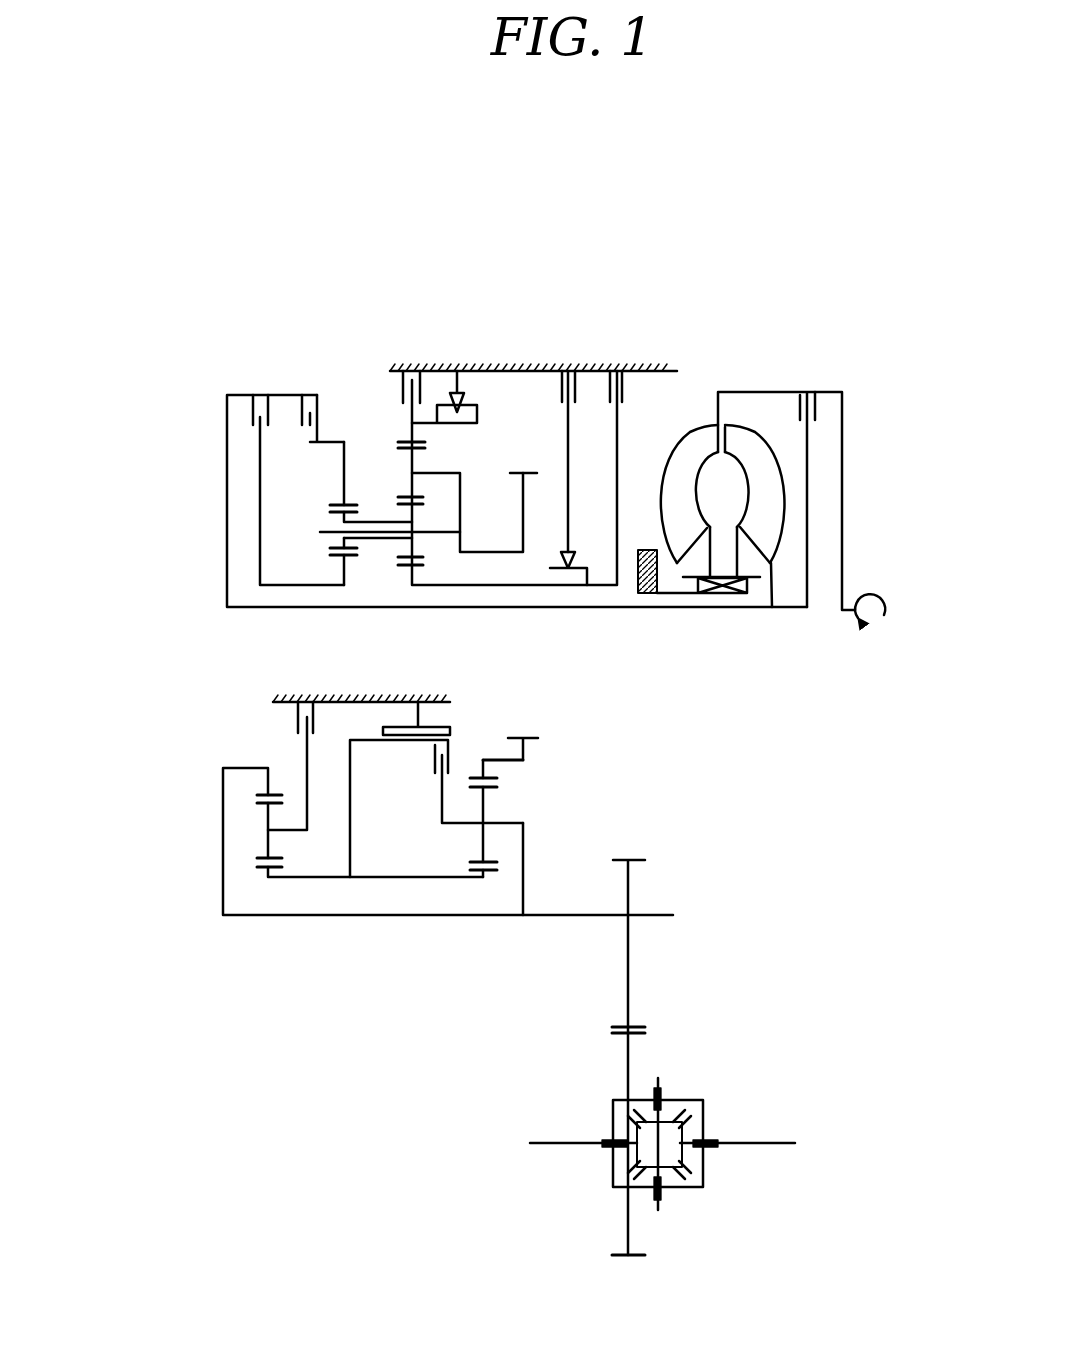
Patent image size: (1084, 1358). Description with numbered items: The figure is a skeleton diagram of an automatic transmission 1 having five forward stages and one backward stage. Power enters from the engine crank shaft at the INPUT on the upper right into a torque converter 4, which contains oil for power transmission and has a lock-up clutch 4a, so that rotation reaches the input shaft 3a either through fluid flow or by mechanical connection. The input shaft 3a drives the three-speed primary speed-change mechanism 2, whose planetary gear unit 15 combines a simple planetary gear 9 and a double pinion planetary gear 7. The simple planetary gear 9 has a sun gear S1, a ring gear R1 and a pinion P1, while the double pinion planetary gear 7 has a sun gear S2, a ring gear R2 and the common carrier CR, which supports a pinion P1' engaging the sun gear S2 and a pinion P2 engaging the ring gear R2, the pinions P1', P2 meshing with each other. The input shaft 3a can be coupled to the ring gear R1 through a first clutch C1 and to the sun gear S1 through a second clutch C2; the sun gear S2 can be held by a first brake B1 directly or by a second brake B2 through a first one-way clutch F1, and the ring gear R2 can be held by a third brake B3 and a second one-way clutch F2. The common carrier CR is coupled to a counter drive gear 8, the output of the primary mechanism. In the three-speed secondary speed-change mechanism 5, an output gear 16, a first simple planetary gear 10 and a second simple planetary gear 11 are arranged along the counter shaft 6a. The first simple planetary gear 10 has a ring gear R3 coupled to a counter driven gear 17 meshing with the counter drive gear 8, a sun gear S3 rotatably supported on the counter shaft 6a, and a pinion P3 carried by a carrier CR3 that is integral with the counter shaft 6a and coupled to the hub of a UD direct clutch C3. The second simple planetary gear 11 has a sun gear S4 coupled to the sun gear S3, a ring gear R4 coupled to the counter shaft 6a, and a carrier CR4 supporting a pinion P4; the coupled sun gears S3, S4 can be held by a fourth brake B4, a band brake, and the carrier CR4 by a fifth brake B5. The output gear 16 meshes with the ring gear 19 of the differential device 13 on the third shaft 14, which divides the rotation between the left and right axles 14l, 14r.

The automatic transmission 1 is at (478, 205).
The primary speed-change mechanism 2 is at (212, 397).
The input shaft 3a is at (645, 609).
The torque converter 4 is at (735, 375).
The lock-up clutch 4a is at (816, 405).
The secondary speed-change mechanism 5 is at (221, 692).
The counter shaft 6a is at (652, 917).
The double pinion planetary gear 7 is at (392, 418).
The counter drive gear 8 is at (526, 472).
The simple planetary gear 9 is at (340, 436).
The first simple planetary gear 10 is at (456, 930).
The second simple planetary gear 11 is at (281, 920).
The differential device 13 is at (732, 1087).
The third shaft 14 is at (730, 1165).
The left axle 14l is at (557, 1145).
The right axle 14r is at (770, 1145).
The planetary gear unit 15 is at (390, 290).
The output gear 16 is at (628, 888).
The counter driven gear 17 is at (526, 737).
The ring gear 19 is at (630, 1057).
The first clutch C1 is at (306, 395).
The second clutch C2 is at (256, 395).
The UD direct clutch C3 is at (436, 799).
The first brake B1 is at (616, 365).
The second brake B2 is at (563, 440).
The third brake B3 is at (533, 366).
The fourth brake B4 is at (416, 698).
The fifth brake B5 is at (361, 697).
The first one-way clutch F1 is at (576, 553).
The second one-way clutch F2 is at (444, 376).
The ring gear R1 is at (342, 477).
The ring gear R2 is at (425, 437).
The ring gear R3 is at (486, 770).
The ring gear R4 is at (268, 783).
The sun gear S1 is at (338, 570).
The sun gear S2 is at (417, 575).
The sun gear S3 is at (487, 875).
The sun gear S4 is at (268, 873).
The pinion P1 is at (341, 521).
The pinion P1' is at (418, 533).
The pinion P2 is at (407, 483).
The pinion P3 is at (483, 842).
The pinion P4 is at (268, 818).
The common carrier CR is at (463, 510).
The carrier CR3 is at (527, 852).
The carrier CR4 is at (307, 767).
The input INPUT is at (890, 585).